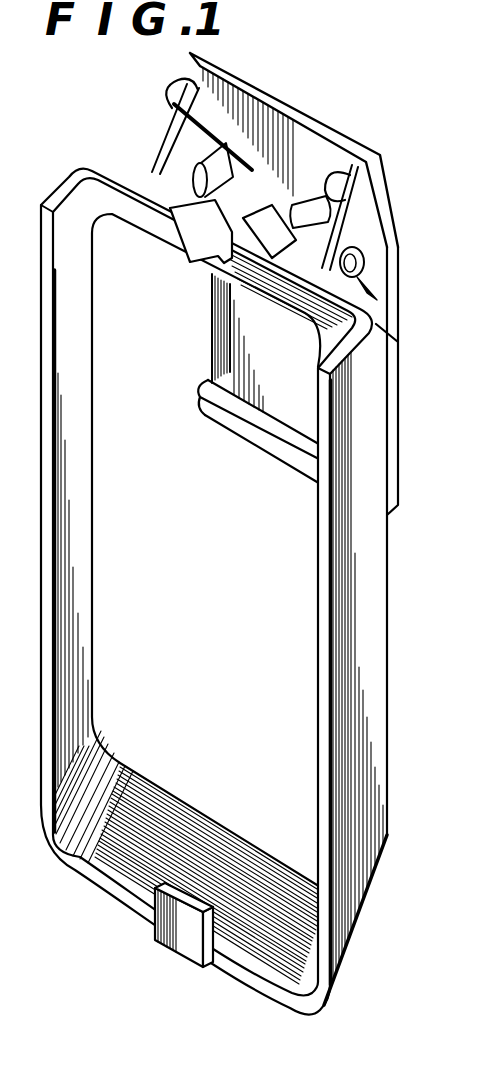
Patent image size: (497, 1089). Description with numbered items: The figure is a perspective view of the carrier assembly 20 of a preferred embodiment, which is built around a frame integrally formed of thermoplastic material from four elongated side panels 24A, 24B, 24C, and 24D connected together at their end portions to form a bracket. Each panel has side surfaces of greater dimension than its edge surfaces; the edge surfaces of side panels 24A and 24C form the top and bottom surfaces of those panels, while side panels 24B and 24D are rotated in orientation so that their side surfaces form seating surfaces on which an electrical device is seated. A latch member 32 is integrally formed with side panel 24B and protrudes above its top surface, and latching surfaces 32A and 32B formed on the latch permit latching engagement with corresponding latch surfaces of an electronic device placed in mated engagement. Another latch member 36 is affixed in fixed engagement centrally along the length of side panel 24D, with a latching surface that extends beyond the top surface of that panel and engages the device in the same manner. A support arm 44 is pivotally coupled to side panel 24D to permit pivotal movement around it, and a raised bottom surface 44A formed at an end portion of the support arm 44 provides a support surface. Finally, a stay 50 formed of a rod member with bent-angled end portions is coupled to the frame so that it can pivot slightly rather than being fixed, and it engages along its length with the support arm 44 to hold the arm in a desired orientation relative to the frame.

The carrier assembly 20 is at (108, 89).
The side panel 24A is at (77, 413).
The side panel 24B is at (140, 812).
The side panel 24C is at (348, 617).
The side panel 24D is at (135, 200).
The latch member 32 is at (163, 943).
The latching surface 32A is at (216, 936).
The latching surface 32B is at (178, 897).
The latch member 36 is at (200, 232).
The support arm 44 is at (230, 343).
The raised bottom surface 44A is at (238, 420).
The stay 50 is at (347, 217).